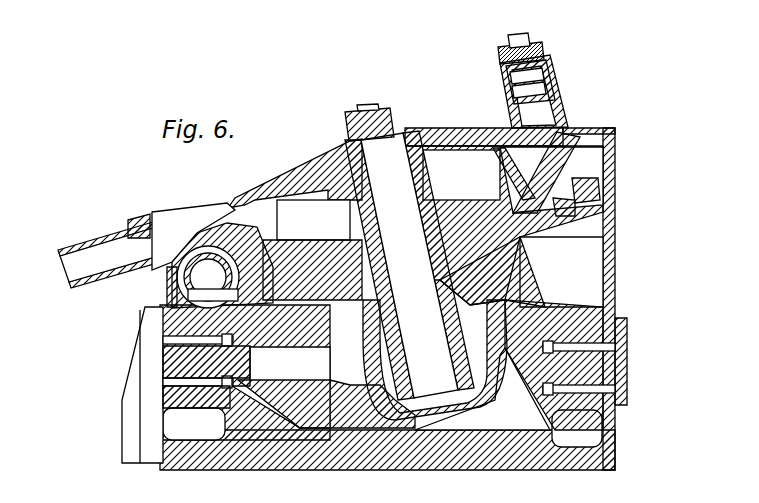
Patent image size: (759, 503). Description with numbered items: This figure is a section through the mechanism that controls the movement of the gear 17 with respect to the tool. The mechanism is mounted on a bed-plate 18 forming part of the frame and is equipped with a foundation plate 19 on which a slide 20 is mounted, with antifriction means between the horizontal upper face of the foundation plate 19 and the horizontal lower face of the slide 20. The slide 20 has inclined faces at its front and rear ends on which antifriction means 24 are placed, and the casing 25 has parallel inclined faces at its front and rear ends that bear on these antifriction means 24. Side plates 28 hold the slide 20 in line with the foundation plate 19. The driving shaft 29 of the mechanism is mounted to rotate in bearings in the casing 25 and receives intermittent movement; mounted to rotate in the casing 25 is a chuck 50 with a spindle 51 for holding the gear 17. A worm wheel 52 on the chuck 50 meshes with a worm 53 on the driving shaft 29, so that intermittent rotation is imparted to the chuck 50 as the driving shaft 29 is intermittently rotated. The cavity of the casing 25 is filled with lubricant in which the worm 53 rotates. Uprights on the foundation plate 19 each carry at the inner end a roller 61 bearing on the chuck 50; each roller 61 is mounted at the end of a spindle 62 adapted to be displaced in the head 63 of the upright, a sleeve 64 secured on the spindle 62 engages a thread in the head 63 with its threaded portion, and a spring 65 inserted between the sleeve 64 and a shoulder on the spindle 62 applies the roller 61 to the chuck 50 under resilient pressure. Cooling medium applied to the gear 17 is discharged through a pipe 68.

The gear 17 is at (305, 168).
The bed-plate 18 is at (193, 460).
The foundation plate 19 is at (180, 395).
The slide 20 is at (172, 358).
The antifriction means 24 is at (192, 337).
The casing 25 is at (520, 297).
The side plates 28 is at (130, 405).
The driving shaft 29 is at (205, 272).
The chuck 50 is at (572, 206).
The spindle 51 is at (390, 150).
The worm wheel 52 is at (590, 192).
The worm 53 is at (166, 280).
The roller 61 is at (560, 115).
The spindle 62 is at (527, 40).
The head 63 is at (555, 90).
The sleeve 64 is at (540, 50).
The spring 65 is at (510, 92).
The pipe 68 is at (68, 272).